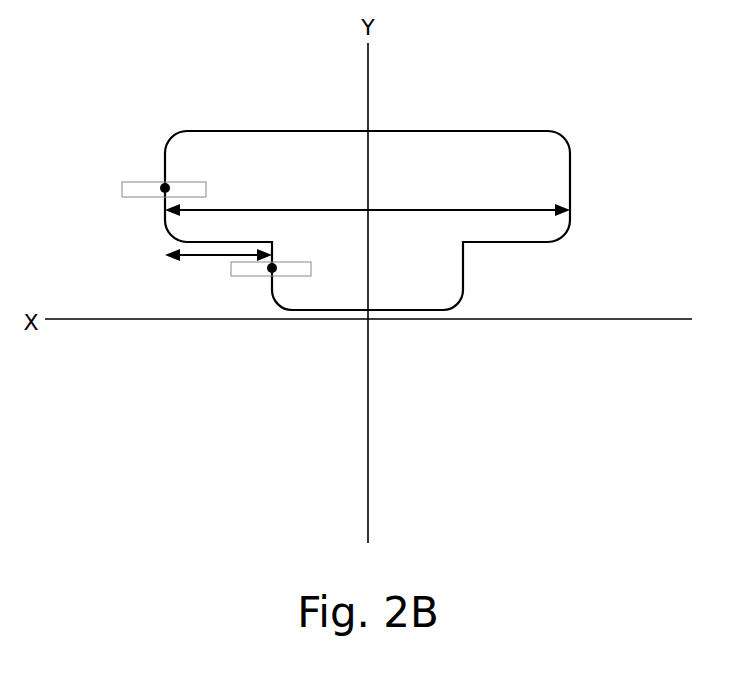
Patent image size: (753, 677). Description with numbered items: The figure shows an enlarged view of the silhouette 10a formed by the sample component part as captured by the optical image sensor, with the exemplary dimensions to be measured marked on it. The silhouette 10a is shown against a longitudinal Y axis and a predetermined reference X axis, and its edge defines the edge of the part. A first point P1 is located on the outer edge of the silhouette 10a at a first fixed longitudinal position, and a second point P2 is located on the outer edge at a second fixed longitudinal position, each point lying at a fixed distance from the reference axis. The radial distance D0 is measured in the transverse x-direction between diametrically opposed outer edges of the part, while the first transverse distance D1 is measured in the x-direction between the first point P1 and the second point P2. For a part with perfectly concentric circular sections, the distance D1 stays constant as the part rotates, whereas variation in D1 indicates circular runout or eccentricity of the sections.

The silhouette 10a is at (532, 166).
The radial distance D0 is at (407, 209).
The first transverse distance D1 is at (220, 253).
The first point P1 is at (164, 188).
The second point P2 is at (271, 268).